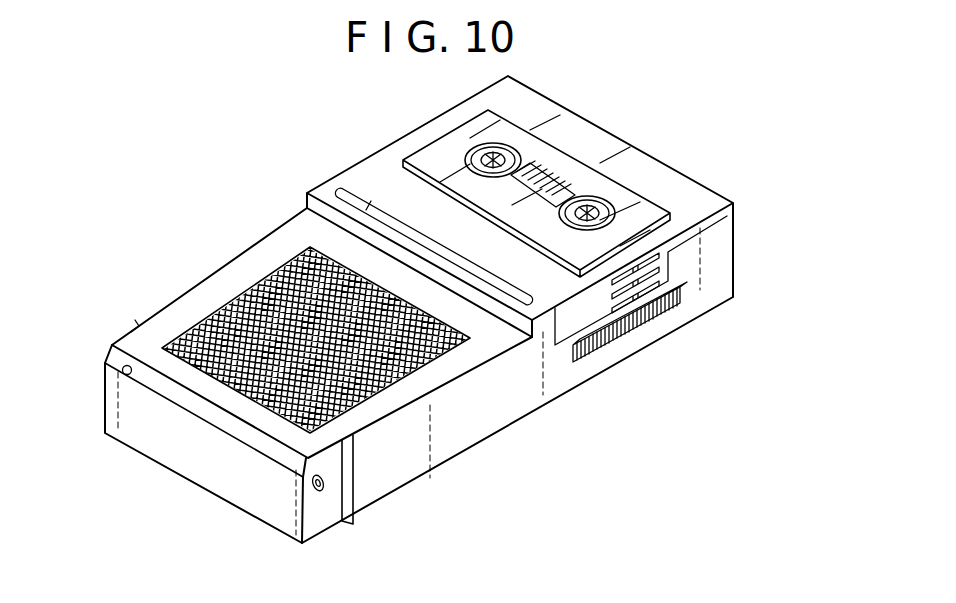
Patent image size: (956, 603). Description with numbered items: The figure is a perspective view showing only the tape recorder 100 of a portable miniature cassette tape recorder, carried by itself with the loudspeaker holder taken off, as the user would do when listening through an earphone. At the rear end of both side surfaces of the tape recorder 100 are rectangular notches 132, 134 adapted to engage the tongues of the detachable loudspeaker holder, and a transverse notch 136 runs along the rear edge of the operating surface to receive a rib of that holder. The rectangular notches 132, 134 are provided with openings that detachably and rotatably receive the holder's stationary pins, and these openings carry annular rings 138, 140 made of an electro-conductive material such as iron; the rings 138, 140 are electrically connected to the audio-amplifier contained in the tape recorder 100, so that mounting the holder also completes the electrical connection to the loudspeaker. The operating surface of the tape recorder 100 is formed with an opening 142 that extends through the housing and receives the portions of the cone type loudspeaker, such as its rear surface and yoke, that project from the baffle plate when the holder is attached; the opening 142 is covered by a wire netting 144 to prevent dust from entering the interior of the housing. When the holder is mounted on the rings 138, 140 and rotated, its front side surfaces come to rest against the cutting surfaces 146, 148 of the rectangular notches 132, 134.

The tape recorder 100 is at (729, 243).
The rectangular notch 132 is at (117, 343).
The rectangular notch 134 is at (318, 523).
The transverse notch 136 is at (232, 428).
The annular ring 138 is at (123, 375).
The annular ring 140 is at (322, 492).
The opening 142 is at (398, 310).
The wire netting 144 is at (240, 302).
The cutting surface 146 is at (135, 323).
The cutting surface 148 is at (352, 481).